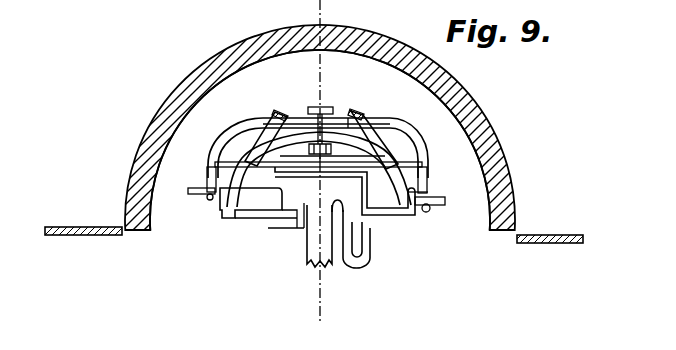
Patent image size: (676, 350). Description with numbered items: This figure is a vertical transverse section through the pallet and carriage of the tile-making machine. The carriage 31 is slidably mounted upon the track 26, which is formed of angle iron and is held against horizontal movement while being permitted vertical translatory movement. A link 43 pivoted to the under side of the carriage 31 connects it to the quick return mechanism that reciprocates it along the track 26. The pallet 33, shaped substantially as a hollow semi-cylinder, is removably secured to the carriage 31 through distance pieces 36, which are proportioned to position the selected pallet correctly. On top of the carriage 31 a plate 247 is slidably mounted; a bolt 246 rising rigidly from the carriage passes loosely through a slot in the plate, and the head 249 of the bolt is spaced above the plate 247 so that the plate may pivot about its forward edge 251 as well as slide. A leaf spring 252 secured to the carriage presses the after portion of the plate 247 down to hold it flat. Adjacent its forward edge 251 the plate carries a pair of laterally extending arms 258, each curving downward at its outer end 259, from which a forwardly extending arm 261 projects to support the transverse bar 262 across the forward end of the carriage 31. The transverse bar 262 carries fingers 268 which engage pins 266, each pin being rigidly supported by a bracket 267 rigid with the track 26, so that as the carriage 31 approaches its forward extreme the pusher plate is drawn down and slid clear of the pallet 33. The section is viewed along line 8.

The pallet 33 is at (500, 153).
The distance pieces 36 is at (185, 145).
The laterally extending arms 258 is at (391, 126).
The outer end of arm 259 is at (417, 146).
The bolt 246 is at (293, 122).
The plate 247 is at (336, 126).
The head of bolt 249 is at (326, 107).
The forward edge of plate 251 is at (276, 113).
The leaf spring 252 is at (288, 113).
The transverse bar 262 is at (220, 165).
The forwardly extending arm 261 is at (426, 168).
The fingers 268 is at (432, 193).
The pins 266 is at (440, 205).
The track 26 is at (348, 176).
The carriage 31 is at (246, 222).
The link 43 is at (311, 246).
The bracket 267 is at (377, 226).
The section line 8 is at (316, 310).